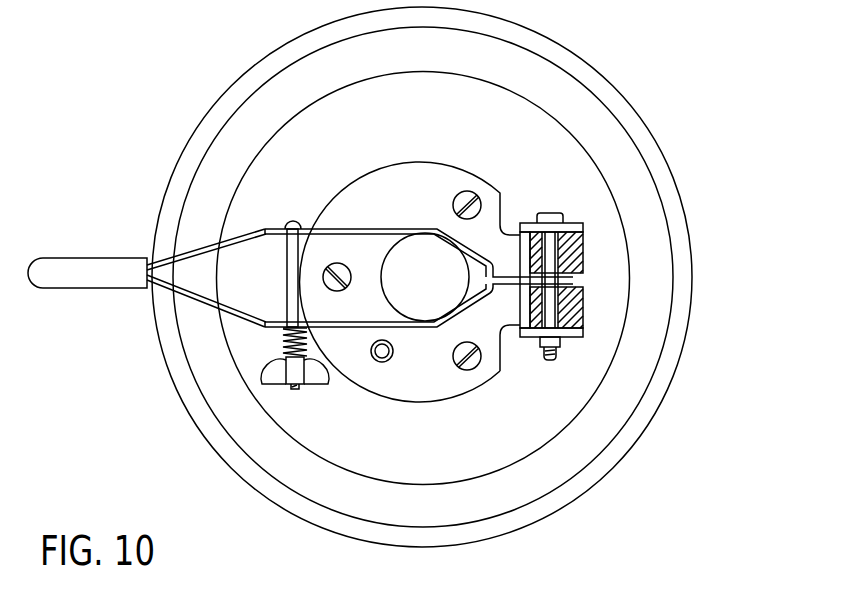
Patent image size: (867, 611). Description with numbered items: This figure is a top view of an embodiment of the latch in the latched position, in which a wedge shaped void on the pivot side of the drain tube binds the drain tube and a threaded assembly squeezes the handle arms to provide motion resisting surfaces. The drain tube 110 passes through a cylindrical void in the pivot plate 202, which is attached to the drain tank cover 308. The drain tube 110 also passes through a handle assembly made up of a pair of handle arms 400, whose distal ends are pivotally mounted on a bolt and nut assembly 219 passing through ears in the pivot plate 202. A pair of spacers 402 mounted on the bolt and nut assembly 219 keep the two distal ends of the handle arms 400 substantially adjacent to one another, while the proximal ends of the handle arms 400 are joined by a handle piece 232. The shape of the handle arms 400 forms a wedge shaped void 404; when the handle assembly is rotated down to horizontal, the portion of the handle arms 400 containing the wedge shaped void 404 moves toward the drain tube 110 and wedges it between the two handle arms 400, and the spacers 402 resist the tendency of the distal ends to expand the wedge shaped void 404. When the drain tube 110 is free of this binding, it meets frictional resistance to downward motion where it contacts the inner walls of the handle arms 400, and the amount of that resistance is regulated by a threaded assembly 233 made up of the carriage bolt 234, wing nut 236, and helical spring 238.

The drain tank cover 308 is at (598, 77).
The pivot plate 202 is at (410, 181).
The drain tube 110 is at (382, 262).
The wedge shaped void 404 is at (470, 257).
The handle piece 232 is at (117, 265).
The handle arms 400 is at (188, 437).
The carriage bolt 234 is at (285, 290).
The helical spring 238 is at (278, 333).
The wing nut 236 is at (317, 385).
The threaded assembly 233 is at (212, 521).
The spacers 402 is at (583, 307).
The bolt and nut assembly 219 is at (553, 212).